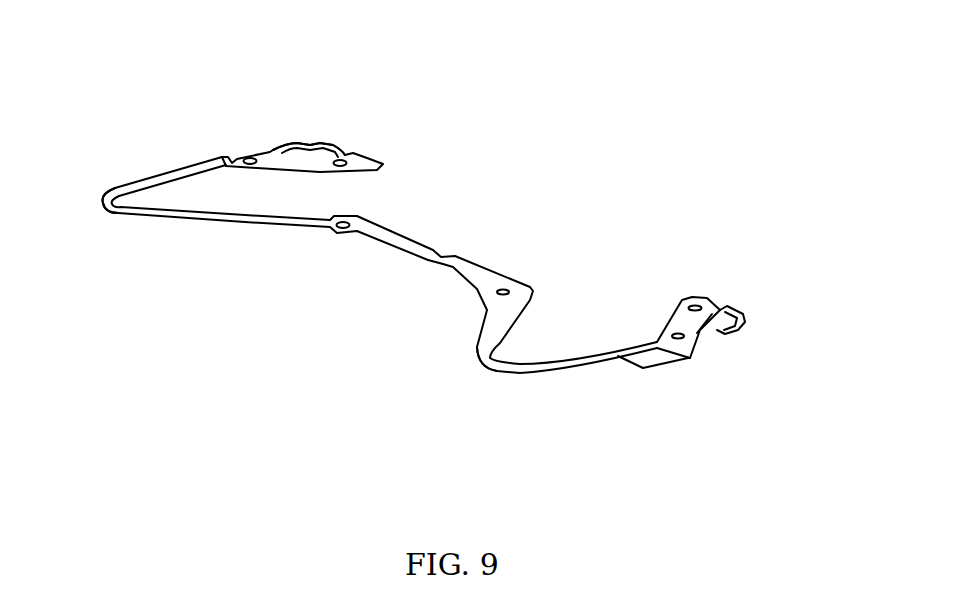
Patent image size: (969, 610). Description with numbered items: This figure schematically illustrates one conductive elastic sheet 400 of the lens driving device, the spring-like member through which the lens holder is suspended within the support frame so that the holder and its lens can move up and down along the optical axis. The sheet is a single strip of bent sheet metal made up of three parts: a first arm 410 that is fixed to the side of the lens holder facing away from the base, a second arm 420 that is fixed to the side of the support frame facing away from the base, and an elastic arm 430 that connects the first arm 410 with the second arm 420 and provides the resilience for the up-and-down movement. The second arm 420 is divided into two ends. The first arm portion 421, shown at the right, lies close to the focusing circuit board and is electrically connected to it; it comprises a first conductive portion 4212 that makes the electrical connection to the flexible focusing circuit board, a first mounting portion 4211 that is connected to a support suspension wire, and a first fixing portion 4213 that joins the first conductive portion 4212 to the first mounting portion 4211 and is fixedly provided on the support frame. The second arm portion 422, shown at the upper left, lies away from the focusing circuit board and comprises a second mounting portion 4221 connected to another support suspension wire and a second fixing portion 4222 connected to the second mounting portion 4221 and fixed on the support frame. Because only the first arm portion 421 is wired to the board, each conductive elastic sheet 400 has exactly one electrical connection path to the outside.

The conductive elastic sheet 400 is at (165, 357).
The first arm 410 is at (393, 237).
The second arm 420 is at (363, 165).
The first arm portion 421 is at (850, 347).
The second arm portion 422 is at (315, 70).
The elastic arm 430 is at (158, 180).
The first mounting portion 4211 is at (737, 327).
The first conductive portion 4212 is at (655, 357).
The first fixing portion 4213 is at (683, 323).
The second mounting portion 4221 is at (317, 152).
The second fixing portion 4222 is at (288, 163).